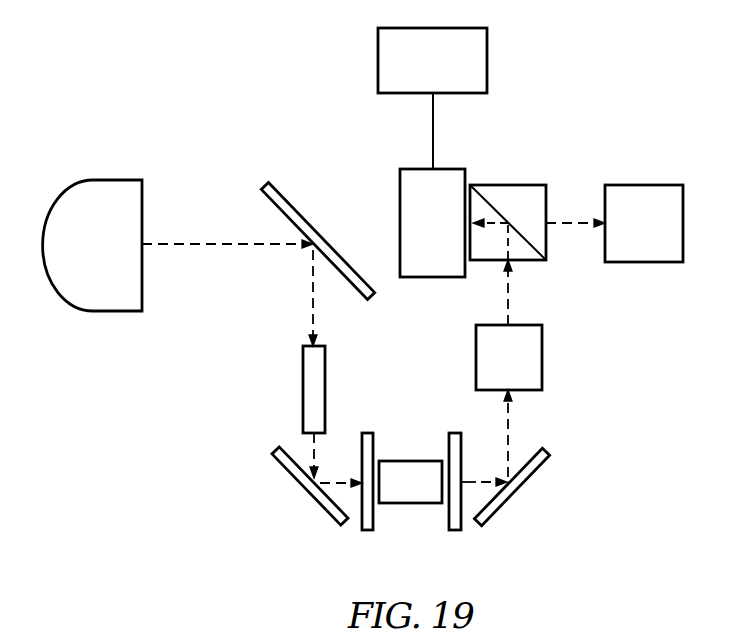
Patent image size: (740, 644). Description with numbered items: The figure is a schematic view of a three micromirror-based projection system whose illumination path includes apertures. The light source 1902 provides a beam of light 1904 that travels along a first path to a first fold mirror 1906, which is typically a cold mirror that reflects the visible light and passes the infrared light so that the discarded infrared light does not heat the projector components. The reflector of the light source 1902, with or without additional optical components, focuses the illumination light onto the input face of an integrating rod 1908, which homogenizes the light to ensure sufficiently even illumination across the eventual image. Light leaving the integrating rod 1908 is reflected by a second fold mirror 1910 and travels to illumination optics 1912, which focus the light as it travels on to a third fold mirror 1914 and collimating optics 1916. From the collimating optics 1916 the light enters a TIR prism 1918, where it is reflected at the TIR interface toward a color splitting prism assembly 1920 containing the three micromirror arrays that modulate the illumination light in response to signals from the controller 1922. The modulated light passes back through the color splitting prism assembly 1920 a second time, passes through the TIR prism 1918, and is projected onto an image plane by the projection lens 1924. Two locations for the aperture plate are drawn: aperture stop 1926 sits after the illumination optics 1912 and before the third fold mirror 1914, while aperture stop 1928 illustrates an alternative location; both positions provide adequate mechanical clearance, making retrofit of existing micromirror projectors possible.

The light source 1902 is at (108, 178).
The beam of light 1904 is at (210, 243).
The first fold mirror 1906 is at (316, 189).
The integrating rod 1908 is at (302, 390).
The second fold mirror 1910 is at (310, 503).
The illumination optics 1912 is at (407, 460).
The third fold mirror 1914 is at (512, 498).
The collimating optics 1916 is at (543, 360).
The TIR prism 1918 is at (515, 184).
The color splitting prism assembly 1920 is at (425, 278).
The controller 1922 is at (489, 59).
The projection lens 1924 is at (650, 184).
The aperture stop 1926 is at (455, 531).
The aperture stop 1928 is at (366, 531).